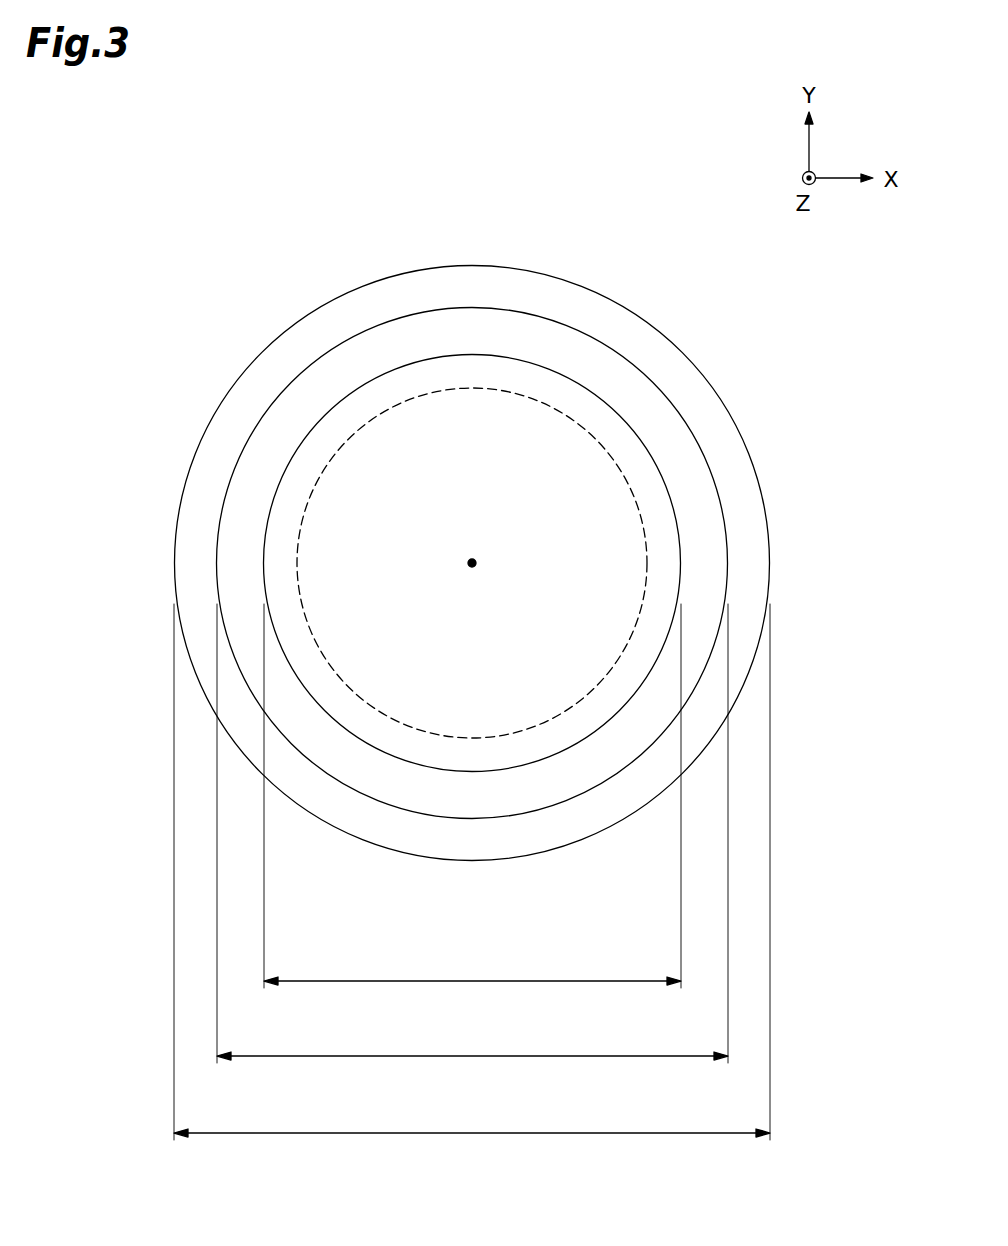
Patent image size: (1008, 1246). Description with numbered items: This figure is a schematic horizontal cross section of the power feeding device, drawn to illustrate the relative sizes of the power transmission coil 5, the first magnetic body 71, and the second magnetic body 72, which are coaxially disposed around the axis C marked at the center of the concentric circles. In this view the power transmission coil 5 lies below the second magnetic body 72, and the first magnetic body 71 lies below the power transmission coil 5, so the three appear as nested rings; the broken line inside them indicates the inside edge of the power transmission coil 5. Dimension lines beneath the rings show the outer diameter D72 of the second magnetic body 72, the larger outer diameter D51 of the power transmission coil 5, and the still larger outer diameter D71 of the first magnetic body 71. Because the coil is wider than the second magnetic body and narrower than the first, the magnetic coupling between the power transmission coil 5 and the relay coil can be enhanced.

The first magnetic body 71 is at (707, 403).
The power transmission coil 5 is at (630, 381).
The second magnetic body 72 is at (547, 382).
The axis C is at (475, 558).
The outer diameter of the second magnetic body D72 is at (472, 796).
The outer diameter of the power transmission coil D51 is at (472, 833).
The outer diameter of the first magnetic body D71 is at (472, 872).